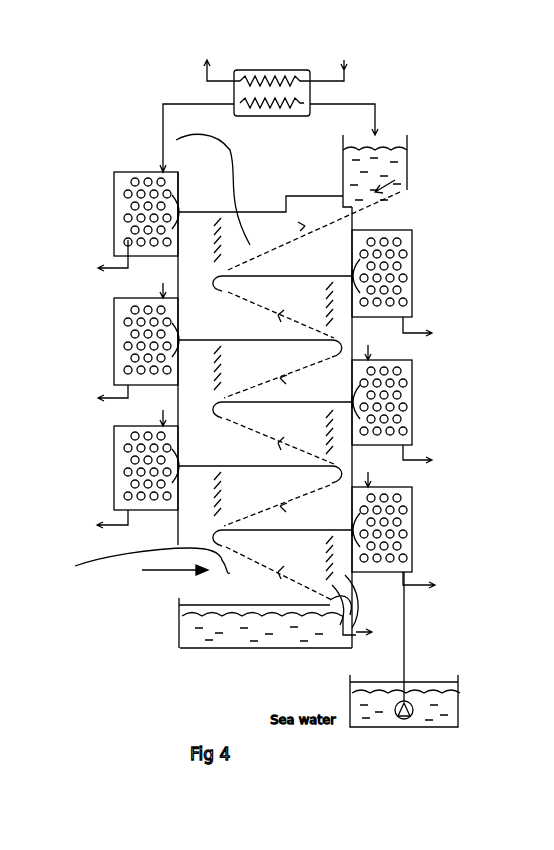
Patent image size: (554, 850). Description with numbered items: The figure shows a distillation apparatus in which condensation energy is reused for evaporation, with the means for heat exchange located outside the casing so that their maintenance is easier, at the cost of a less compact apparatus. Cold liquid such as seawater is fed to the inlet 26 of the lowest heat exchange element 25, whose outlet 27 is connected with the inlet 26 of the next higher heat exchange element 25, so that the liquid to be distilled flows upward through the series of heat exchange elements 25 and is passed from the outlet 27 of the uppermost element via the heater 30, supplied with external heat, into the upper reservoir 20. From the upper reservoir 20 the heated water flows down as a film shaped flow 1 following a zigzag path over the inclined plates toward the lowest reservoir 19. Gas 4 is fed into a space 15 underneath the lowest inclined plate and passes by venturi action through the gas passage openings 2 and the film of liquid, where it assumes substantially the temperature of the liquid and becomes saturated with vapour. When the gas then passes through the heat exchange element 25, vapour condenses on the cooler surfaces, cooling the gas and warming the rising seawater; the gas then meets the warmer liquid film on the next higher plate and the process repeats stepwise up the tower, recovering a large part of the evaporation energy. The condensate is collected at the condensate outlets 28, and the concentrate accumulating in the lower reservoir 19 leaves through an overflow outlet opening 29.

The film shaped flow of liquid 1 is at (389, 187).
The gas passage openings 2 is at (163, 104).
The gas 4 is at (193, 585).
The space underneath the lowest inclined plate 15 is at (75, 566).
The lowest reservoir 19 is at (273, 647).
The upper reservoir 20 is at (404, 158).
The heat exchange element 25 is at (115, 335).
The inlet of heat exchange element 26 is at (130, 278).
The outlet of heat exchange element 27 is at (163, 168).
The condensate outlets 28 is at (89, 272).
The overflow outlet opening 29 is at (354, 620).
The heat exchanger 30 is at (273, 70).